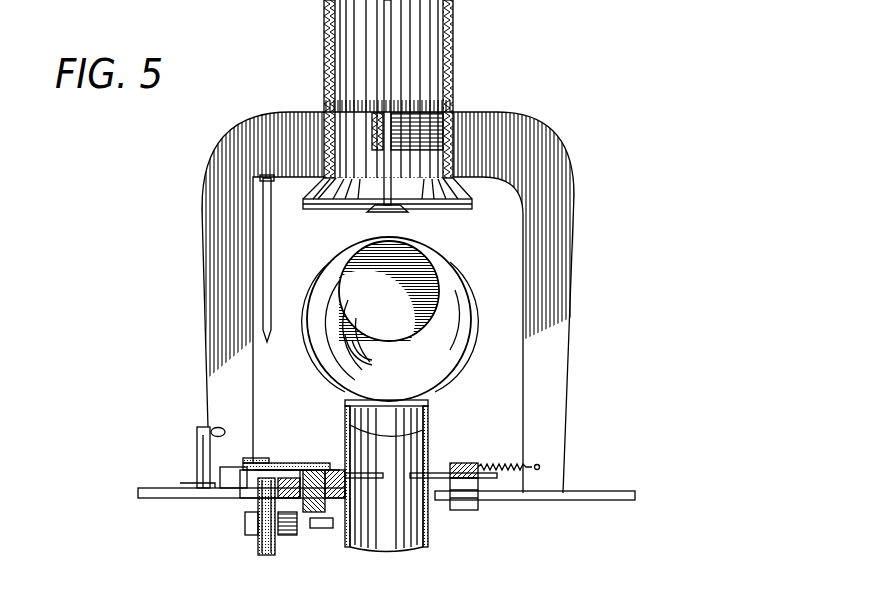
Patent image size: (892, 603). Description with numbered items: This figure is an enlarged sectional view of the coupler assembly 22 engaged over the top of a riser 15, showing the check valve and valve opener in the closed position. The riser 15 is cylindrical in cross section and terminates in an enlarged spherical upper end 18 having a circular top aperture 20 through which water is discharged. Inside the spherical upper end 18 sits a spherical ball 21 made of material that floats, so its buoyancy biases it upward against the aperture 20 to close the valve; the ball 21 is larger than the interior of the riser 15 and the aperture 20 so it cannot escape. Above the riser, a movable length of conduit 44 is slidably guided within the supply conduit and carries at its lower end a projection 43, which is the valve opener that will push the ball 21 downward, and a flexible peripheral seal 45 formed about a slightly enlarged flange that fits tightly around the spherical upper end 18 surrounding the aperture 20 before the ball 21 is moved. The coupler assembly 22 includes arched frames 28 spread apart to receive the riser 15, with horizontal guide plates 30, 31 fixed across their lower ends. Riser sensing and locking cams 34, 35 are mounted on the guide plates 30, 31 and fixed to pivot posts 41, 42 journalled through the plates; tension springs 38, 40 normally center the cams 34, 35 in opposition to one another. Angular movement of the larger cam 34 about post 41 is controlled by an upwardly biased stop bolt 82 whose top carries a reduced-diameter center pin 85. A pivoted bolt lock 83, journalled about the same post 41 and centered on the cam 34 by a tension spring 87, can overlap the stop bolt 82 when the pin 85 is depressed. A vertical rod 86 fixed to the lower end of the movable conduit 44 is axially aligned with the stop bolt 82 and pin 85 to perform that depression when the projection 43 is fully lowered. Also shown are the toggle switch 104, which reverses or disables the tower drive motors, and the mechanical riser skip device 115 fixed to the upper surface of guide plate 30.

The riser 15 is at (430, 413).
The spherical upper end 18 is at (464, 302).
The circular top aperture 20 is at (422, 252).
The spherical ball 21 is at (437, 283).
The coupler assembly 22 is at (464, 102).
The arched frames 28 is at (562, 378).
The guide plate 30 is at (232, 497).
The guide plate 31 is at (545, 500).
The riser sensing and locking cam 34 is at (350, 463).
The riser sensing and locking cam 35 is at (428, 462).
The tension spring 38 is at (280, 467).
The tension spring 40 is at (516, 470).
The pivot post 41 is at (333, 508).
The pivot post 42 is at (462, 512).
The projection 43 is at (380, 207).
The movable conduit 44 is at (451, 34).
The flexible peripheral seal 45 is at (458, 207).
The stop bolt 82 is at (272, 463).
The bolt lock 83 is at (312, 470).
The center pin 85 is at (263, 458).
The vertical rod 86 is at (271, 250).
The tension spring 87 is at (372, 480).
The toggle switch 104 is at (195, 430).
The mechanical device 115 is at (218, 480).